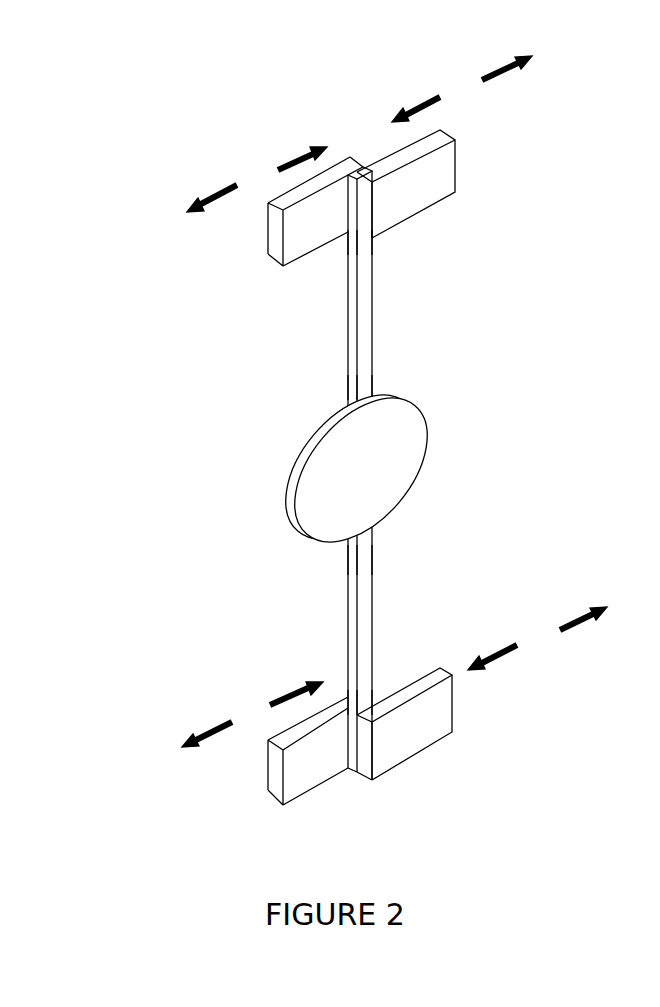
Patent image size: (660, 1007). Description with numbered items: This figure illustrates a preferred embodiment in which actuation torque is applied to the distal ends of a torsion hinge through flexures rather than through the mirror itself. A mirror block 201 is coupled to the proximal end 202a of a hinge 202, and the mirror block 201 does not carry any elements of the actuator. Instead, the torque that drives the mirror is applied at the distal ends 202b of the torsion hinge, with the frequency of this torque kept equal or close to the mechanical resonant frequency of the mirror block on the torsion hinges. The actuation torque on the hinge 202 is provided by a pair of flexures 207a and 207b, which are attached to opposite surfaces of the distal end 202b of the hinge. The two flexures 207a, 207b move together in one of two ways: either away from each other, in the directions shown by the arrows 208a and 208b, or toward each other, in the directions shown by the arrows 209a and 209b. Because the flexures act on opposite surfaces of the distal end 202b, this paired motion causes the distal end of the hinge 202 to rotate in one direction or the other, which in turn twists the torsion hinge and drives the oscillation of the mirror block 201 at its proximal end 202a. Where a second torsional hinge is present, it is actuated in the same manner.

The mirror block 201 is at (282, 473).
The hinge 202 is at (386, 296).
The proximal end 202a is at (331, 397).
The distal end 202b is at (381, 250).
The flexure 207a is at (418, 188).
The flexure 207b is at (296, 228).
The arrow 208a is at (552, 341).
The arrow 208b is at (200, 450).
The arrow 209a is at (471, 377).
The arrow 209b is at (291, 407).